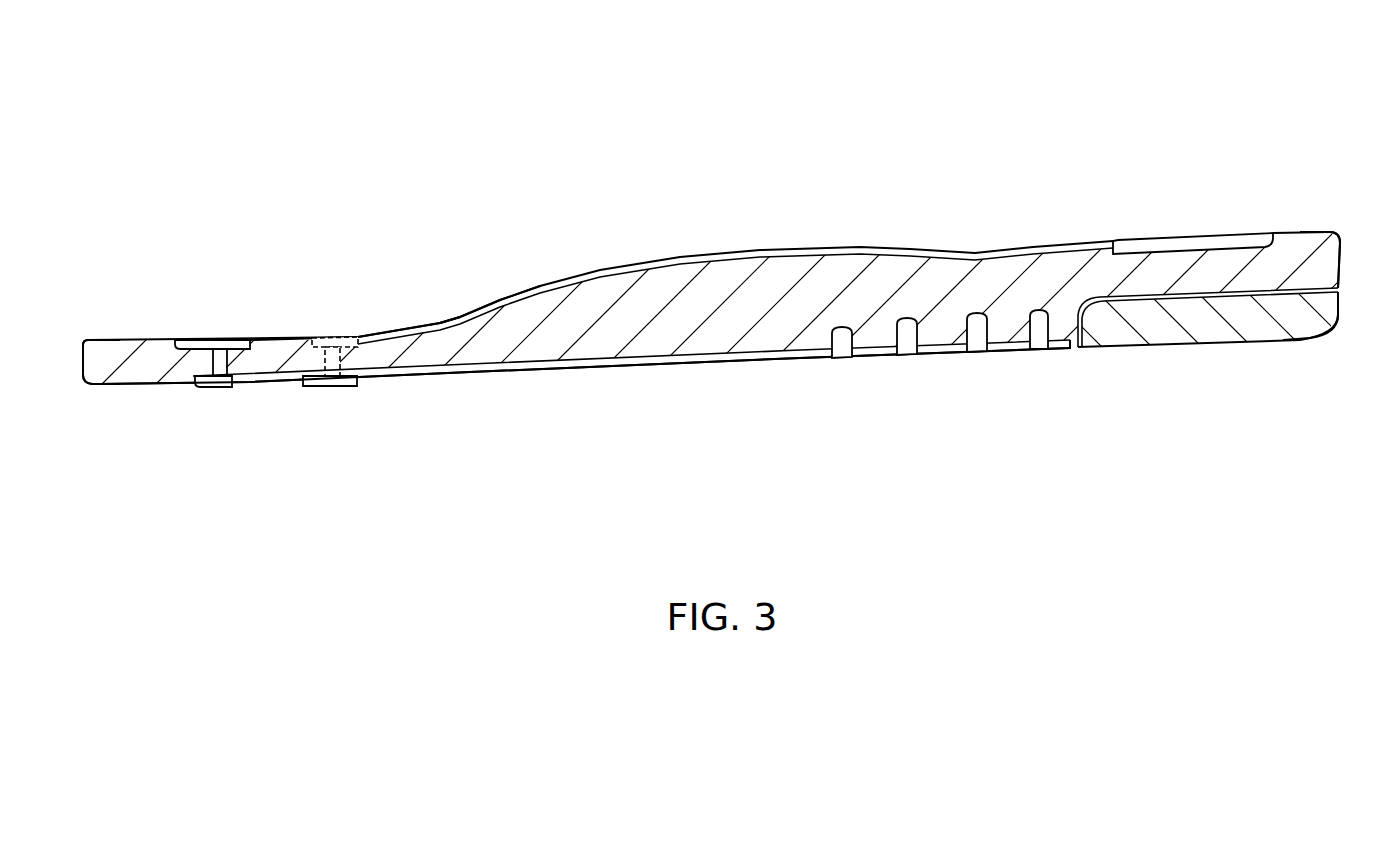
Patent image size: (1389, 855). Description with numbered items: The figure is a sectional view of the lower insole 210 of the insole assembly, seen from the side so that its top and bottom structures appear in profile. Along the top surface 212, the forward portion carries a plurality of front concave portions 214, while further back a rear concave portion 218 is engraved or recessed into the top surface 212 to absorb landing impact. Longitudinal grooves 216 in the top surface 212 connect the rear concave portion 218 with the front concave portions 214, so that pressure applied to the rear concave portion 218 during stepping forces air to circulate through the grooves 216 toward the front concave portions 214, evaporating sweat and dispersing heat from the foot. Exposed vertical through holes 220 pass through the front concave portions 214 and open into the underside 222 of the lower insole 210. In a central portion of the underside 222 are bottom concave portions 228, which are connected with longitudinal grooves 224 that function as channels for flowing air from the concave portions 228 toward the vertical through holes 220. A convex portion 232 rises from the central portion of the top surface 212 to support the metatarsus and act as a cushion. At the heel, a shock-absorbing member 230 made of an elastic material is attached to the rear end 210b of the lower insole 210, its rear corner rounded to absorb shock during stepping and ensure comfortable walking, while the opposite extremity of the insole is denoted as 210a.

The lower insole 210 is at (680, 140).
The front end of sole 210a is at (108, 330).
The rear end 210b is at (1333, 217).
The top surface 212 is at (399, 308).
The front concave portions 214 is at (330, 338).
The longitudinal grooves 216 is at (462, 318).
The rear concave portion 218 is at (1212, 238).
The vertical through holes 220 is at (349, 387).
The underside 222 is at (727, 368).
The longitudinal grooves 224 is at (482, 373).
The bottom concave portions 228 is at (845, 345).
The shock-absorbing member 230 is at (1212, 332).
The convex portion 232 is at (750, 272).